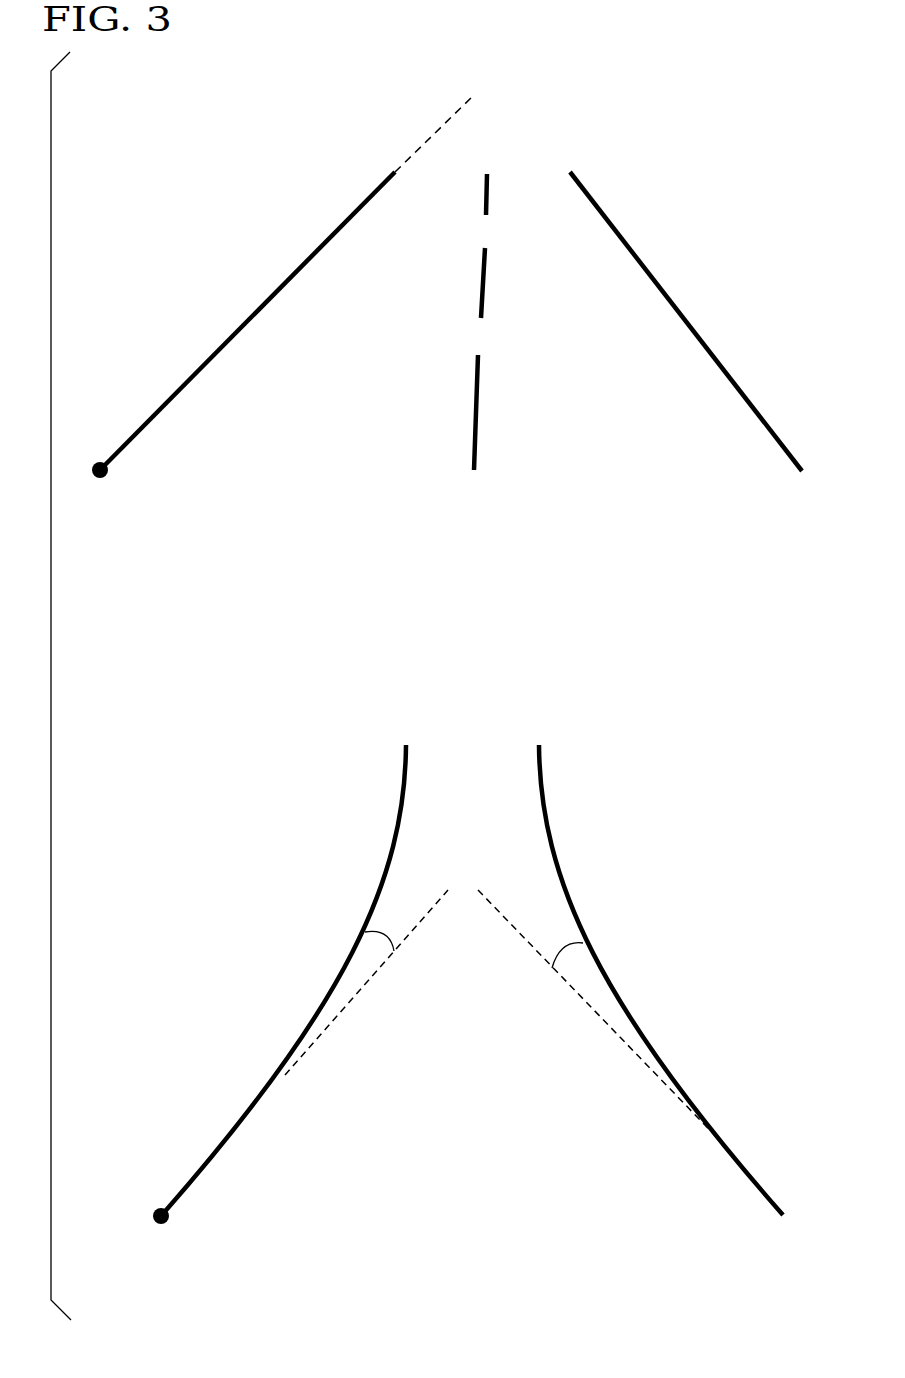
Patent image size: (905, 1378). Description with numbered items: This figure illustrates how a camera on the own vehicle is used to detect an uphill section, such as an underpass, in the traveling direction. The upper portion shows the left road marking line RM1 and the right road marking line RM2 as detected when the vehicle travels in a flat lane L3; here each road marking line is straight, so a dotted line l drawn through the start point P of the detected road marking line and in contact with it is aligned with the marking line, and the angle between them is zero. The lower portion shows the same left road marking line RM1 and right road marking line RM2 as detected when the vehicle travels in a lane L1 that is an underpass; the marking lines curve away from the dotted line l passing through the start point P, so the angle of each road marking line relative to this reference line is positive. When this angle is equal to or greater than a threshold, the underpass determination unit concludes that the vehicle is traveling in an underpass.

The left road marking line RM1 is at (185, 382).
The right road marking line RM2 is at (735, 380).
The start point P is at (101, 479).
The flat lane L3 is at (493, 548).
The lane which is an underpass L1 is at (494, 1233).
The dotted line l is at (474, 980).